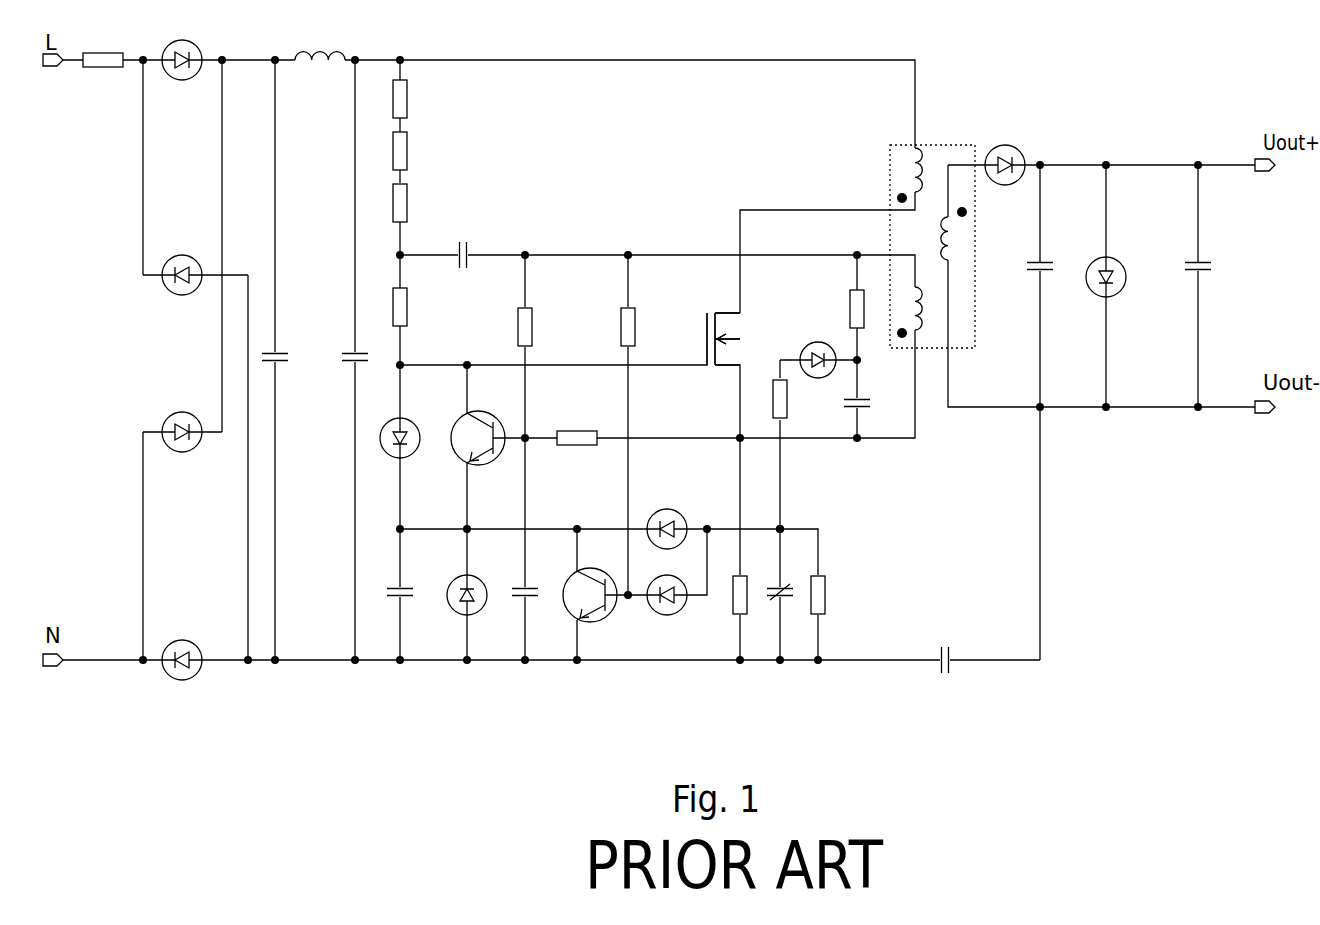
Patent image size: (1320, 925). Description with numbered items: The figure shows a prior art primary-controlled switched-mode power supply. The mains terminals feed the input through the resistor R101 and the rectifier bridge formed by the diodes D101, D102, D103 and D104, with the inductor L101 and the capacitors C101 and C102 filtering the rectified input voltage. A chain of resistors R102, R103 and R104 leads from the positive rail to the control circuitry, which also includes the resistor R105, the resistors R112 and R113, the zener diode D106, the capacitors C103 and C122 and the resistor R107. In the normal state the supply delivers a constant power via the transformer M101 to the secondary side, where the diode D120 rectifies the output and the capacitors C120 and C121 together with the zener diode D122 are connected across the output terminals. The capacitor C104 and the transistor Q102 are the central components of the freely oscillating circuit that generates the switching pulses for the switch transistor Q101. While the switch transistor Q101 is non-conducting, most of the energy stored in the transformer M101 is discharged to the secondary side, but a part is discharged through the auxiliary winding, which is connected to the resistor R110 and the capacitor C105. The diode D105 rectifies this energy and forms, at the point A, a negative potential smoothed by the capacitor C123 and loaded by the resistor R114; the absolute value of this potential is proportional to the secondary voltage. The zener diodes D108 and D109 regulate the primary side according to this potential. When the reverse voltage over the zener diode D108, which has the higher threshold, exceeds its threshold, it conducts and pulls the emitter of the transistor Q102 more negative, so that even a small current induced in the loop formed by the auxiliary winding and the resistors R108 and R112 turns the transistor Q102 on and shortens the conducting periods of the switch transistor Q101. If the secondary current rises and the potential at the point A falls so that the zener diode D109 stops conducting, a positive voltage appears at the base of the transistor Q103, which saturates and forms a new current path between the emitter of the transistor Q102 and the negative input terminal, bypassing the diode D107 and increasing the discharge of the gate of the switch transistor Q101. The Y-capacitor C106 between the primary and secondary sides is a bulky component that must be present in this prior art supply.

The input resistor R101 is at (110, 46).
The rectifier diode D101 is at (193, 49).
The input inductor L101 is at (324, 43).
The rectifier diode D102 is at (181, 261).
The rectifier diode D103 is at (181, 418).
The rectifier diode D104 is at (181, 645).
The filter capacitor C101 is at (300, 345).
The filter capacitor C102 is at (330, 373).
The start-up resistor R102 is at (431, 99).
The start-up resistor R103 is at (431, 151).
The start-up resistor R104 is at (431, 203).
The capacitor C104 is at (495, 244).
The resistor R105 is at (431, 307).
The resistor R112 is at (556, 327).
The resistor R113 is at (734, 365).
The switch transistor Q101 is at (726, 326).
The zener diode D106 is at (422, 428).
The transistor Q102 is at (494, 415).
The resistor R108 is at (588, 424).
The resistor R110 is at (830, 304).
The diode D105 is at (821, 345).
The capacitor C105 is at (882, 389).
The transformer M101 is at (926, 235).
The output rectifier diode D120 is at (1010, 150).
The output capacitor C120 is at (1064, 252).
The output zener diode D122 is at (1127, 291).
The output capacitor C121 is at (1226, 252).
The zener diode D108 is at (683, 516).
The zener diode D109 is at (656, 608).
The transistor Q103 is at (601, 585).
The capacitor C103 is at (426, 578).
The capacitor C122 is at (509, 578).
The diode D107 is at (463, 608).
The resistor R107 is at (719, 609).
The capacitor C123 is at (773, 613).
The resistor R114 is at (849, 595).
The point A is at (783, 526).
The Y-capacitor C106 is at (971, 648).